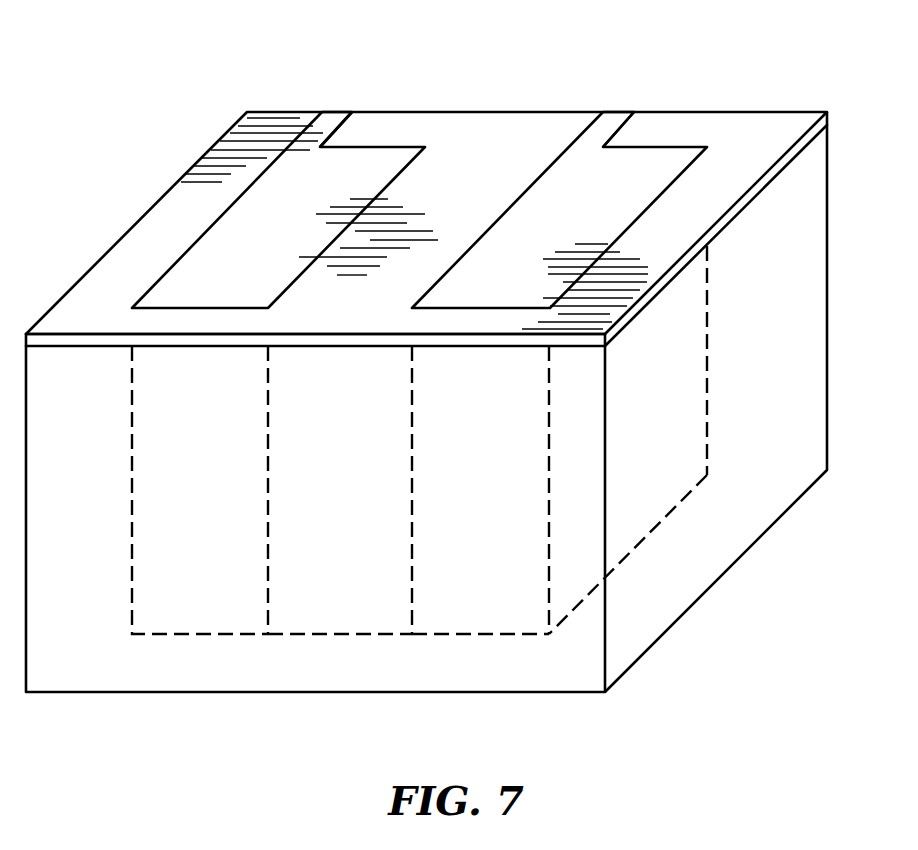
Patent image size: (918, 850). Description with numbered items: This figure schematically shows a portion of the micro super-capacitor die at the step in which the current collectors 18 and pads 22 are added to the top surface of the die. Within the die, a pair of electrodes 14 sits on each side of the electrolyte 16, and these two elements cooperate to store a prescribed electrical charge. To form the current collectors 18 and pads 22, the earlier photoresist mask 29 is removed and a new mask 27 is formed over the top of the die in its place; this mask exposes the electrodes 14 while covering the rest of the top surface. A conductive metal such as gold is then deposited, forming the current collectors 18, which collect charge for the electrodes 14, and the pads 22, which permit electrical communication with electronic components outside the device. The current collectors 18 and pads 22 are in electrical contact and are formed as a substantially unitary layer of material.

The electrode 14 is at (185, 567).
The electrolyte 16 is at (332, 567).
The current collector 18 is at (213, 287).
The pad 22 is at (330, 128).
The mask 27 is at (718, 537).
The photoresist mask 29 is at (493, 175).